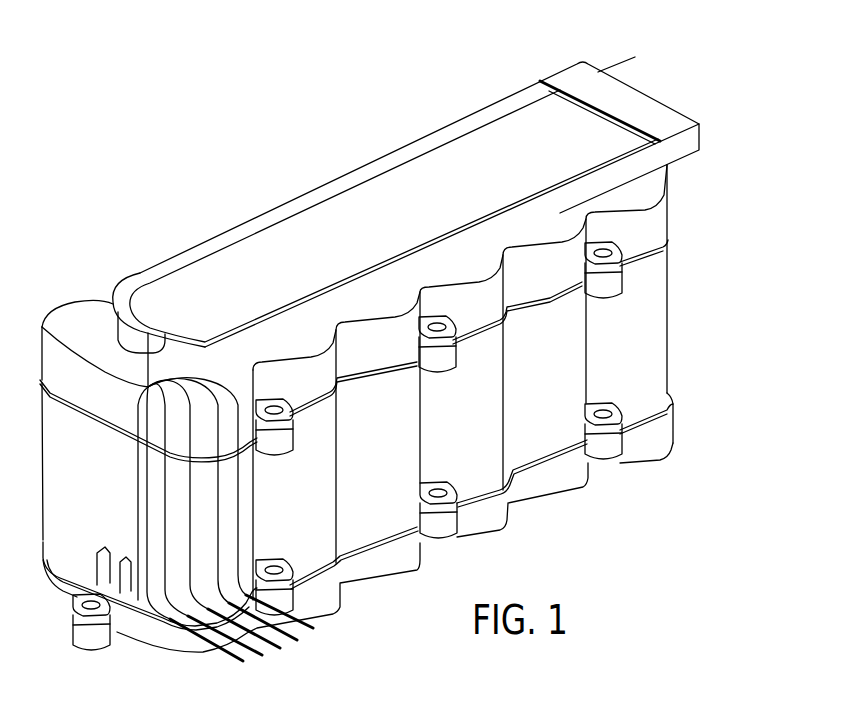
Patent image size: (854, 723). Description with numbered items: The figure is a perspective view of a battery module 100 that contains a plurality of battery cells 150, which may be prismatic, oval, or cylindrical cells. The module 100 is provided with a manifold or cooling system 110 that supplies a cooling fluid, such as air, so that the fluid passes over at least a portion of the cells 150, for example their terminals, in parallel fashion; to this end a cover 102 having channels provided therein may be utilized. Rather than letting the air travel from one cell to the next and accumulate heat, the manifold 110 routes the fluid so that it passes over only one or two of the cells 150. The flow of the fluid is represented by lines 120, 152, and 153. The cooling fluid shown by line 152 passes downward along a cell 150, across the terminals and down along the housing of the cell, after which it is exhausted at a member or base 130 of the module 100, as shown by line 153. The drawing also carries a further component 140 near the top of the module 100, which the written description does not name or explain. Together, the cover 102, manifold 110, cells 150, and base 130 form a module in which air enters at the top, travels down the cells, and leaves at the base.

The battery module 100 is at (331, 62).
The cover 102 is at (262, 210).
The manifold or cooling system 110 is at (77, 312).
The fluid flow line 120 is at (418, 156).
The member or base 130 is at (648, 443).
The connector block 140 is at (611, 63).
The battery cell 150 is at (653, 327).
The fluid flow line 152 is at (147, 502).
The exhaust flow line 153 is at (237, 661).